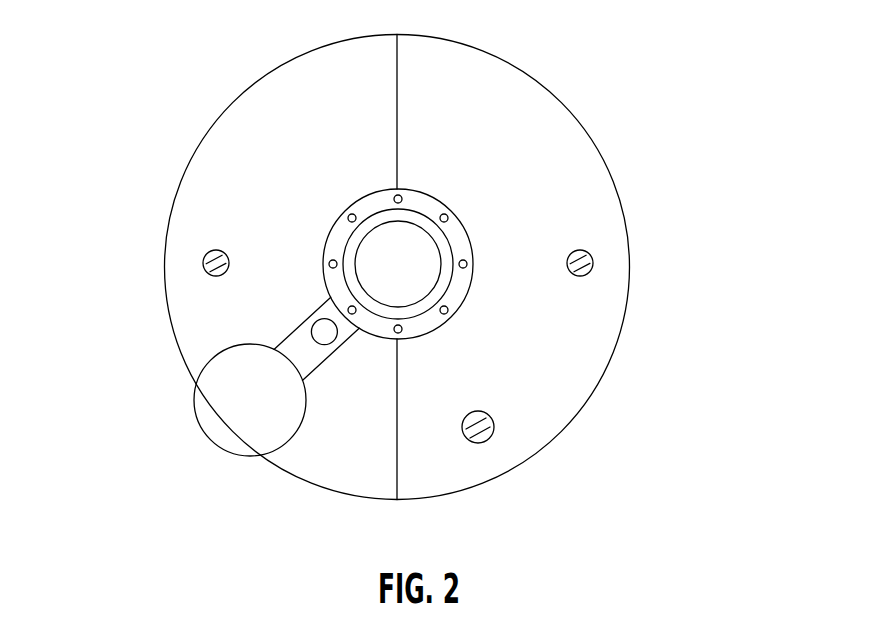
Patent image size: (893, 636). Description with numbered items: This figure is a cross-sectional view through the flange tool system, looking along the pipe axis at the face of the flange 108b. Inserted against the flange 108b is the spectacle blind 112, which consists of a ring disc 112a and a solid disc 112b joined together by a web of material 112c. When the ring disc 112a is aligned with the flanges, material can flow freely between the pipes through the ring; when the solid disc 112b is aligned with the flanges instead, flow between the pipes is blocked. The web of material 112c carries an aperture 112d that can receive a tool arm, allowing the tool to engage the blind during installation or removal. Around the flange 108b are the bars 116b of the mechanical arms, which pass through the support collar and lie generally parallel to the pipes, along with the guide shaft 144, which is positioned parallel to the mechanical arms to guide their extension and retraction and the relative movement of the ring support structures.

The flange 108b is at (354, 205).
The spectacle blind 112 is at (450, 243).
The ring disc 112a is at (423, 222).
The solid disc 112b is at (225, 437).
The web of material 112c is at (292, 335).
The aperture 112d is at (322, 344).
The bar 116b is at (203, 263).
The guide shaft 144 is at (490, 440).